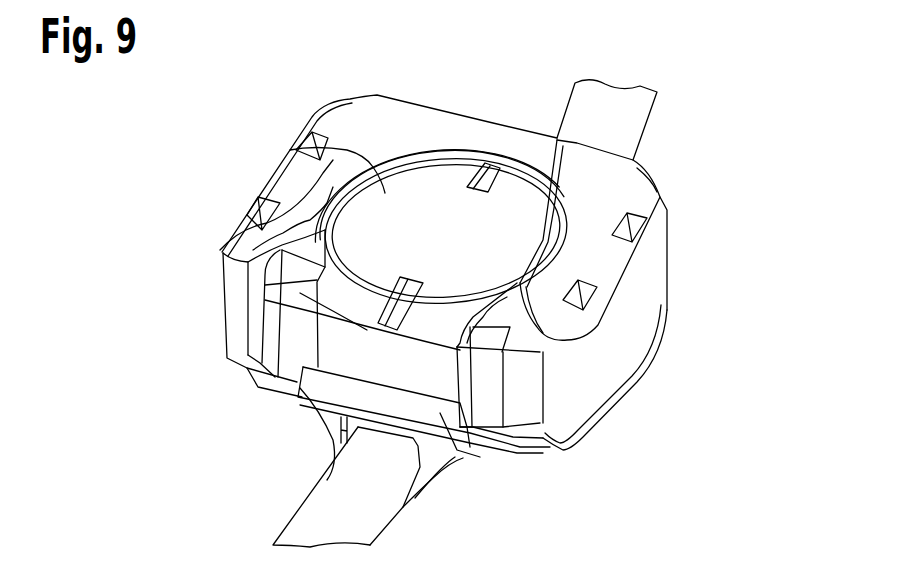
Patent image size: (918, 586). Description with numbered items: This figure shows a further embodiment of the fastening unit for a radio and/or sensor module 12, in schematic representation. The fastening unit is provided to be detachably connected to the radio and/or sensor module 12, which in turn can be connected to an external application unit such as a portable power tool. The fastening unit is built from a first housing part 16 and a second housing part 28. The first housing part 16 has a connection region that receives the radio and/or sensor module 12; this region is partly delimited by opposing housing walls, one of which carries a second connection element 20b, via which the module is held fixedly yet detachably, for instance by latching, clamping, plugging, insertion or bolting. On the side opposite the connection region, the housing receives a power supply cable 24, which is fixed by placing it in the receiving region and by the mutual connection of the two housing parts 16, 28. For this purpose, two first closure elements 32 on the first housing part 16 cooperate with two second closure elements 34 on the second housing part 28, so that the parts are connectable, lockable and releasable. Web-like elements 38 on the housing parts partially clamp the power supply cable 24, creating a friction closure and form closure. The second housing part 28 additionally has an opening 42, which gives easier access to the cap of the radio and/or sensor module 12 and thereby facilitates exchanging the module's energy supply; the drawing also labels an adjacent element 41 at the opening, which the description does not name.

The radio and/or sensor module 12 is at (290, 150).
The first housing part 16 is at (633, 377).
The second connection element 20b is at (477, 458).
The power supply cable 24 is at (365, 517).
The second housing part 28 is at (648, 263).
The first closure elements 32 is at (451, 229).
The second closure elements 34 is at (252, 208).
The web-like elements 38 is at (334, 430).
The opening 41 is at (417, 197).
The opening 42 is at (440, 155).